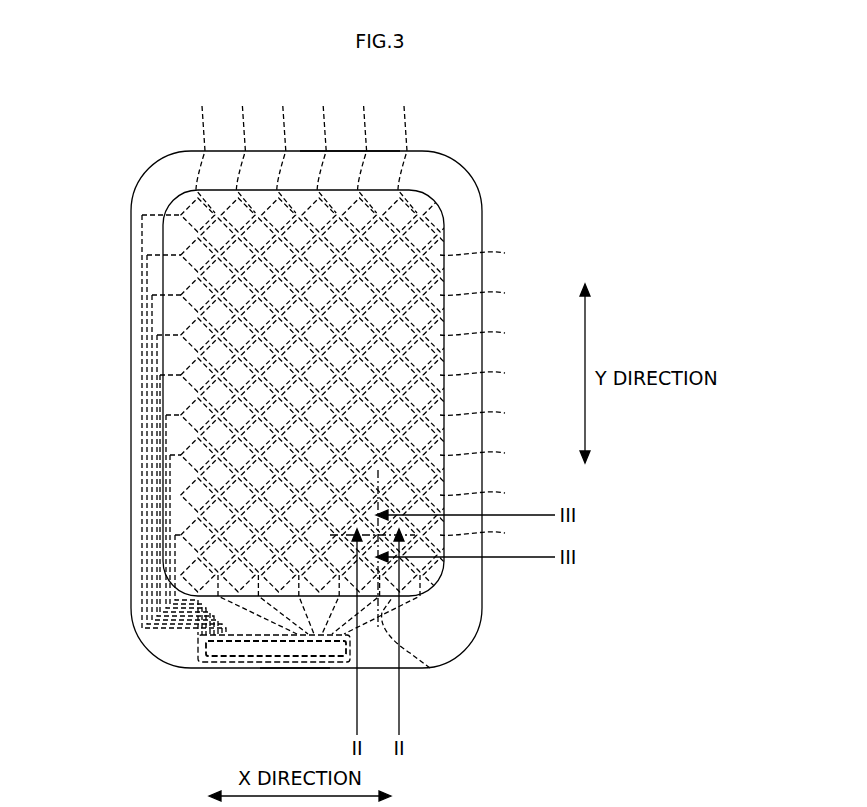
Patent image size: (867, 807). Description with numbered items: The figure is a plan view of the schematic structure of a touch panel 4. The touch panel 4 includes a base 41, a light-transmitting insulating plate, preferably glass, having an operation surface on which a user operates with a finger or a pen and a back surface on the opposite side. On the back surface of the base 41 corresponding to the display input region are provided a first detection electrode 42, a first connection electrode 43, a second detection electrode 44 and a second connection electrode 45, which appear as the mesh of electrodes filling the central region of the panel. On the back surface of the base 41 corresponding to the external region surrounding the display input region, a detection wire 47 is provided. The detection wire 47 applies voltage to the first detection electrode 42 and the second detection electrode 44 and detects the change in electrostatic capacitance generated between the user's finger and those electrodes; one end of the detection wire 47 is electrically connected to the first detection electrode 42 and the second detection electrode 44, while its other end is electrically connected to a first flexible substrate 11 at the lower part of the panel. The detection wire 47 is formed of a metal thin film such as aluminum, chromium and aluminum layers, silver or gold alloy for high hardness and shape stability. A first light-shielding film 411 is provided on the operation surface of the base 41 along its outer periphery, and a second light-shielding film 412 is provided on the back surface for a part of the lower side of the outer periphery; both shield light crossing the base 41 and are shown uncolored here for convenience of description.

The touch panel 4 is at (474, 124).
The base 41 is at (131, 548).
The first light-shielding film 411 is at (458, 192).
The second light-shielding film 412 is at (199, 668).
The first detection electrode 42 is at (303, 148).
The first connection electrode 43 is at (420, 213).
The second detection electrode 44 is at (420, 590).
The second connection electrode 45 is at (485, 394).
The detection wire 47 is at (430, 668).
The first flexible substrate 11 is at (198, 636).